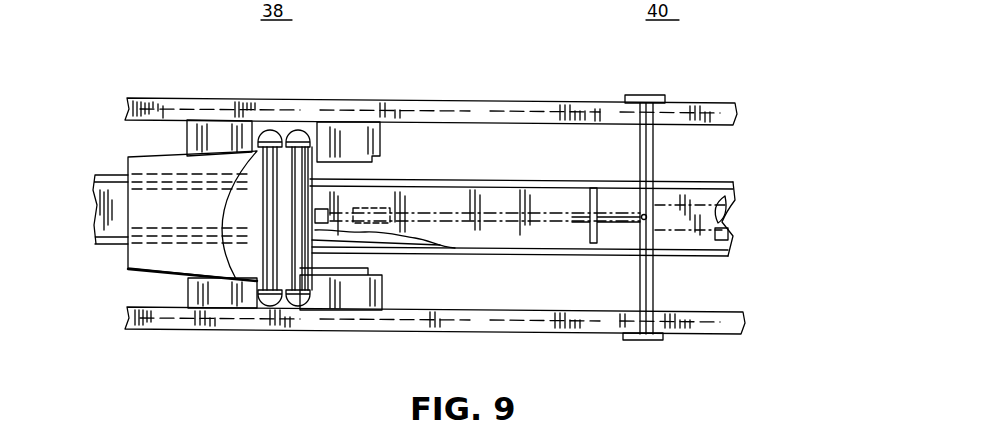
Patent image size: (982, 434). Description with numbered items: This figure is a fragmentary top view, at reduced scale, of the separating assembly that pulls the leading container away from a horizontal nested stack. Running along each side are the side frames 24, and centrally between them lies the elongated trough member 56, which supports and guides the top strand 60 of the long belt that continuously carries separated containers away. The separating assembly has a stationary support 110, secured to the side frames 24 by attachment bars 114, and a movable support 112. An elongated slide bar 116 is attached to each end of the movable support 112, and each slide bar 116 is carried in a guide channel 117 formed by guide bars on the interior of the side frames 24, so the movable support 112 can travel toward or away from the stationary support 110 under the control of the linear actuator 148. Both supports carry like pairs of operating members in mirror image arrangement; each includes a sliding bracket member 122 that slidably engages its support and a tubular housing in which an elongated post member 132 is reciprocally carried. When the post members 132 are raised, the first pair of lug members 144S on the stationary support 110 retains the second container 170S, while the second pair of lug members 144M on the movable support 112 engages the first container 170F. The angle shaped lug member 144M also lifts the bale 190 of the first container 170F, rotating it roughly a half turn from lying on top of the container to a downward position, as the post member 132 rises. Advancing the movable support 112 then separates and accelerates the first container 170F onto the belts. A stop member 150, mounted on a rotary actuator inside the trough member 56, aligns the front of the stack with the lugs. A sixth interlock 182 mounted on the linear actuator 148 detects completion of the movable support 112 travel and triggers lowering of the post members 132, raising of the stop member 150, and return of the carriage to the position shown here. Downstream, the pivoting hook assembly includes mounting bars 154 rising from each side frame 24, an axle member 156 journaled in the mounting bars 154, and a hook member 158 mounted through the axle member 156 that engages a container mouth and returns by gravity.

The side frame 24 is at (478, 101).
The trough member 56 is at (418, 249).
The top strand 60 is at (578, 179).
The stationary support 110 is at (195, 165).
The movable support 112 is at (380, 266).
The attachment bar 114 is at (175, 104).
The slide bar 116 is at (460, 108).
The guide channel 117 is at (570, 107).
The sliding bracket member 122 is at (213, 128).
The post member 132 is at (269, 127).
The first pair of lug members 144S is at (284, 132).
The second pair of lug members 144M is at (281, 286).
The linear actuator 148 is at (735, 205).
The stop member 150 is at (327, 216).
The mounting bar 154 is at (660, 95).
The axle member 156 is at (653, 158).
The hook member 158 is at (597, 246).
The second container 170S is at (127, 162).
The first container 170F is at (452, 248).
The sixth interlock 182 is at (728, 236).
The bale 190 is at (215, 209).